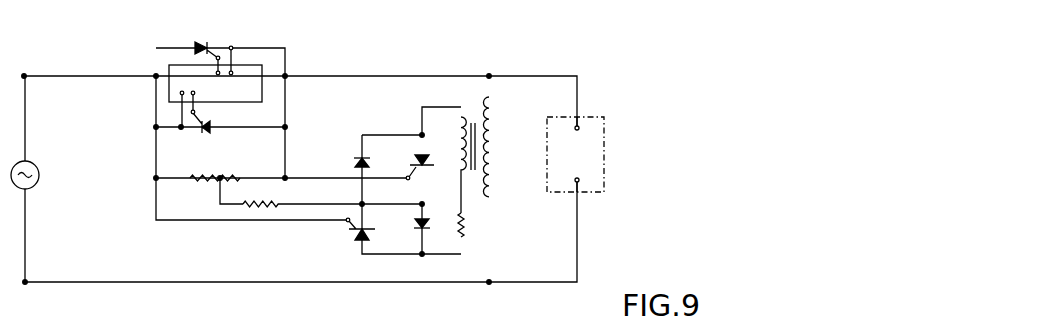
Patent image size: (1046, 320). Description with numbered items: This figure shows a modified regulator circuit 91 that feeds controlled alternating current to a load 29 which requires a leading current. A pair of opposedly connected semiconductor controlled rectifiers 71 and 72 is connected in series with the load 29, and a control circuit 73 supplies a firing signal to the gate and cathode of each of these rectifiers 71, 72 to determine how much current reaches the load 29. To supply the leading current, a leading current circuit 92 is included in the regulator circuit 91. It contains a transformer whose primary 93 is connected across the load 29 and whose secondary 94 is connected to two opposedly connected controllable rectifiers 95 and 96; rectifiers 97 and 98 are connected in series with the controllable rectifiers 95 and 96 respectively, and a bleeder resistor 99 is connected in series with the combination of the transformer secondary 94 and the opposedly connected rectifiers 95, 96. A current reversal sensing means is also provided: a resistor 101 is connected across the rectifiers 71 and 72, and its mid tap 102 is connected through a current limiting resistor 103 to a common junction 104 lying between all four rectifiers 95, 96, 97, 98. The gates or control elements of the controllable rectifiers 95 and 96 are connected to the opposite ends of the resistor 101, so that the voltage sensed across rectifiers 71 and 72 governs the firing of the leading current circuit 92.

The load 29 is at (605, 170).
The controllable rectifier 71 is at (200, 42).
The controllable rectifier 72 is at (213, 129).
The control circuit 73 is at (236, 103).
The regulator circuit 91 is at (323, 124).
The leading current circuit 92 is at (452, 202).
The transformer primary 93 is at (489, 157).
The transformer secondary 94 is at (456, 129).
The controllable rectifier 95 is at (358, 236).
The controllable rectifier 96 is at (436, 146).
The rectifier 97 is at (355, 163).
The rectifier 98 is at (441, 223).
The bleeder resistor 99 is at (463, 232).
The resistor 101 is at (207, 175).
The mid tap 102 is at (215, 182).
The current limiting resistor 103 is at (268, 201).
The common junction 104 is at (365, 205).